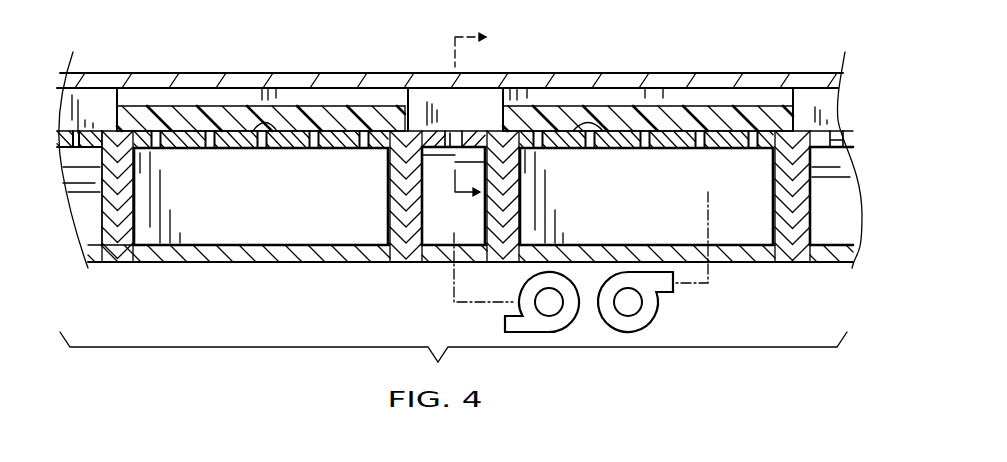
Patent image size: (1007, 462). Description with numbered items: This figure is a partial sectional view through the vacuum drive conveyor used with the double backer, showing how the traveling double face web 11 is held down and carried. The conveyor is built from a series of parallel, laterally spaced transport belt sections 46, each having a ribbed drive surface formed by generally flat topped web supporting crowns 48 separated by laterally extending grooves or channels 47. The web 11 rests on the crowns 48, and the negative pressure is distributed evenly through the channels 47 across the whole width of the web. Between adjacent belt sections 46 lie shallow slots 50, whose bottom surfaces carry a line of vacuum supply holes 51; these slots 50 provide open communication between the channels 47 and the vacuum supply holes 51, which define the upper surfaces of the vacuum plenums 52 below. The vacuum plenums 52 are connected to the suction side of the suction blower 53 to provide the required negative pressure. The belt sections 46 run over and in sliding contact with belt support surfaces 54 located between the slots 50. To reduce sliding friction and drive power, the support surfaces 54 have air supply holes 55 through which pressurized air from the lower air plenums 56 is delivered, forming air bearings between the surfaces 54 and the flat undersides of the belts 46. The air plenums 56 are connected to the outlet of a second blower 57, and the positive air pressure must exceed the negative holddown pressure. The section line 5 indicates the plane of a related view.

The double face web 11 is at (507, 80).
The crowns 48 is at (238, 73).
The grooves or channels 47 is at (587, 95).
The transport belt sections 46 is at (362, 117).
The slots 50 is at (423, 130).
The vacuum supply holes 51 is at (452, 132).
The belt support surfaces 54 is at (280, 148).
The air supply holes 55 is at (161, 152).
The air plenums 56 is at (245, 231).
The vacuum plenums 52 is at (448, 243).
The suction blower 53 is at (505, 322).
The second blower 57 is at (660, 310).
The section line 5 is at (461, 115).